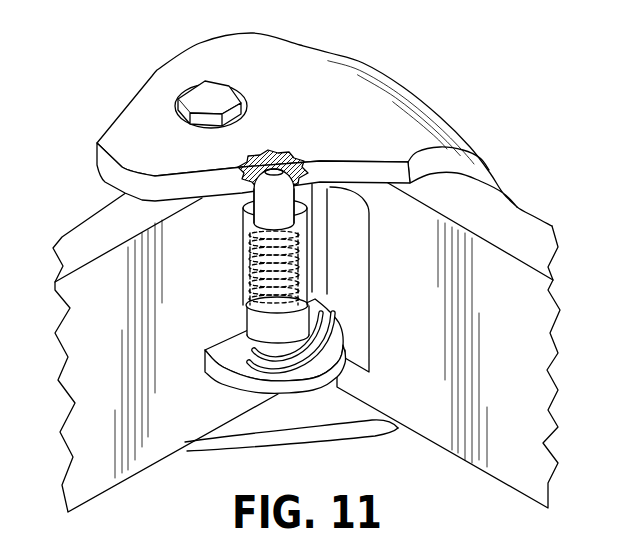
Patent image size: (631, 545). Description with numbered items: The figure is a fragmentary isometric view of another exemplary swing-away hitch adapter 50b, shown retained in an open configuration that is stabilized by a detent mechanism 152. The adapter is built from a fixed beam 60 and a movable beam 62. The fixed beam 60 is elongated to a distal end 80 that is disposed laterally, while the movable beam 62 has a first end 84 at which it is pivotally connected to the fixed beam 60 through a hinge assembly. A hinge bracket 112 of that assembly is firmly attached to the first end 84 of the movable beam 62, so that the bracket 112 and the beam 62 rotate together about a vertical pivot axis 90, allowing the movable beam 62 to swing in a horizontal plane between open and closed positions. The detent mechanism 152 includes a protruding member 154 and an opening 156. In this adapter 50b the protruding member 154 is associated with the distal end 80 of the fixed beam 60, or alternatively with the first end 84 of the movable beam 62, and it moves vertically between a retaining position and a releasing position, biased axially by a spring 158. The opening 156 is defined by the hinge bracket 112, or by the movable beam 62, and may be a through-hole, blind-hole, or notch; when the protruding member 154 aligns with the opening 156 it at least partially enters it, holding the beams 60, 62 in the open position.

The hitch adapter 50b is at (290, 159).
The fixed beam 60 is at (86, 212).
The movable beam 62 is at (526, 207).
The distal end 80 is at (172, 420).
The first end 84 is at (412, 400).
The pivot axis 90 is at (210, 98).
The bracket 112 is at (402, 86).
The detent mechanism 152 is at (308, 157).
The protruding member 154 is at (243, 213).
The opening 156 is at (280, 149).
The spring 158 is at (245, 278).